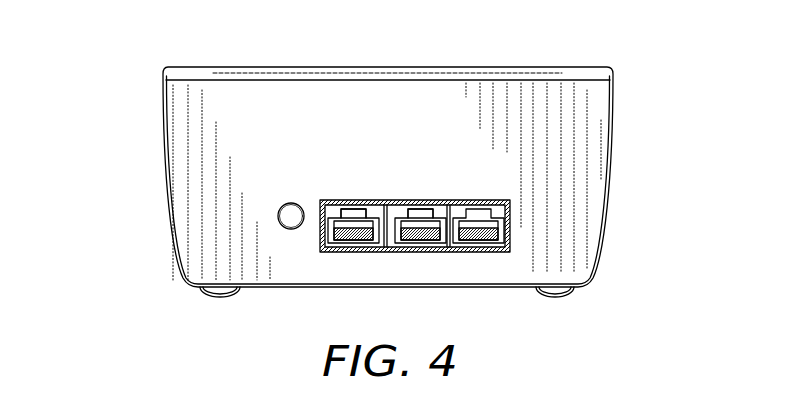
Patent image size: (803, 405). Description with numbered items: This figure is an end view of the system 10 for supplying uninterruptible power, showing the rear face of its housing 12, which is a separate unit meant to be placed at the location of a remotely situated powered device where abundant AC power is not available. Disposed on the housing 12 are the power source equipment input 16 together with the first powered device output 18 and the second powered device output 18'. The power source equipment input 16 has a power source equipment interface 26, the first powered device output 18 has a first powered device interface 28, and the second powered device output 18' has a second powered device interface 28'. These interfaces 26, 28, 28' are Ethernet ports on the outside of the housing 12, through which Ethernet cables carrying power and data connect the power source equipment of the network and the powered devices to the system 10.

The system 10 is at (138, 66).
The housing 12 is at (612, 172).
The power source equipment input 16 is at (497, 255).
The first powered device output 18 is at (300, 250).
The second powered device output 18' is at (478, 246).
The power source equipment interface 26 is at (500, 203).
The first powered device interface 28 is at (302, 191).
The second powered device interface 28' is at (456, 189).